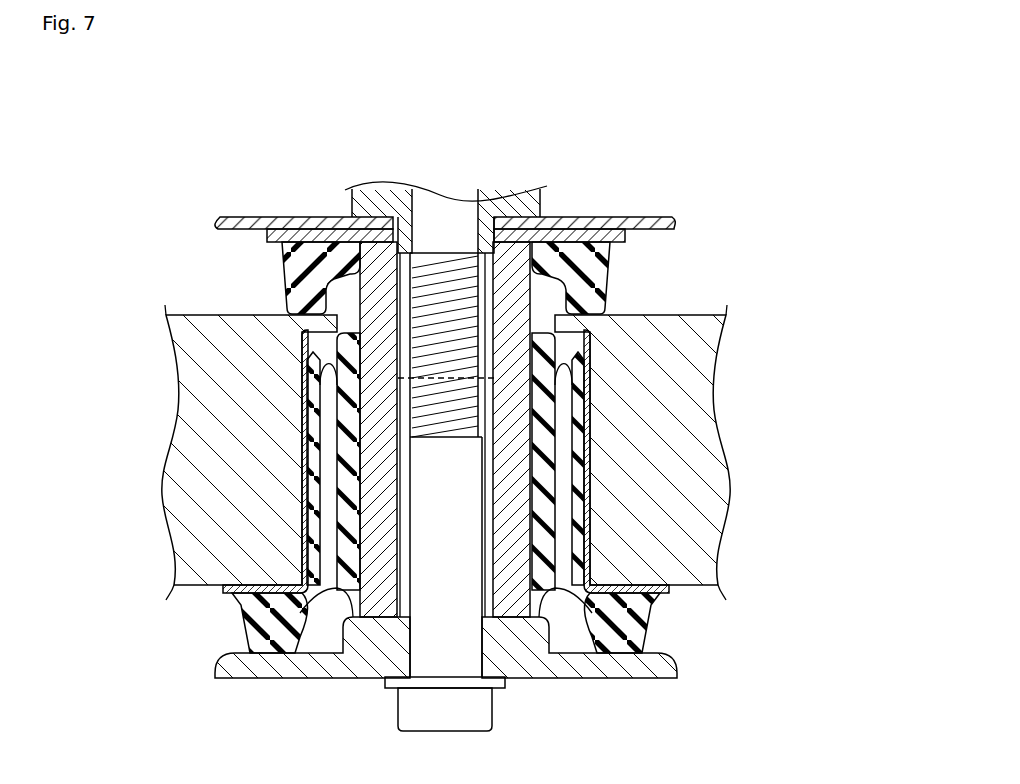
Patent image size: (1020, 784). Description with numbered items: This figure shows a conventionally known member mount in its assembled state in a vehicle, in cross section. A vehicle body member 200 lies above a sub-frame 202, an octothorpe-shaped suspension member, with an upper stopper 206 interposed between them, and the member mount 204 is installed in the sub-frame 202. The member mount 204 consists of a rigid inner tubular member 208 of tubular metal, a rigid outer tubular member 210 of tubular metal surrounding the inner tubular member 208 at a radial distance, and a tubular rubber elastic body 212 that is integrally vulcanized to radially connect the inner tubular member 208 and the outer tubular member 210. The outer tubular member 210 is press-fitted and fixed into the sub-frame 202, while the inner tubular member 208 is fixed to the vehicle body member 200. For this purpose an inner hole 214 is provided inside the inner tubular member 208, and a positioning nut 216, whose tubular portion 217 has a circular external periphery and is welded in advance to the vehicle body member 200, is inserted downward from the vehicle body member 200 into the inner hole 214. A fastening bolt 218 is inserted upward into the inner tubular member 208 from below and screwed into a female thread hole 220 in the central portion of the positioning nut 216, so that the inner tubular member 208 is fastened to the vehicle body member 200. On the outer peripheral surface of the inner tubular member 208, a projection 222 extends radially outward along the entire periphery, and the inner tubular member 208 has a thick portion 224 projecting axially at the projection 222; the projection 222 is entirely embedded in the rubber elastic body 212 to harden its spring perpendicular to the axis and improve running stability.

The vehicle body member 200 is at (652, 214).
The sub-frame 202 is at (682, 404).
The member mount 204 is at (562, 348).
The upper stopper 206 is at (272, 280).
The inner tubular member 208 is at (373, 488).
The outer tubular member 210 is at (303, 405).
The rubber elastic body 212 is at (565, 472).
The inner hole 214 is at (483, 532).
The positioning nut 216 is at (503, 198).
The tubular portion 217 is at (487, 282).
The fastening bolt 218 is at (432, 585).
The female thread hole 220 is at (414, 280).
The projection 222 is at (522, 428).
The thick portion 224 is at (520, 498).